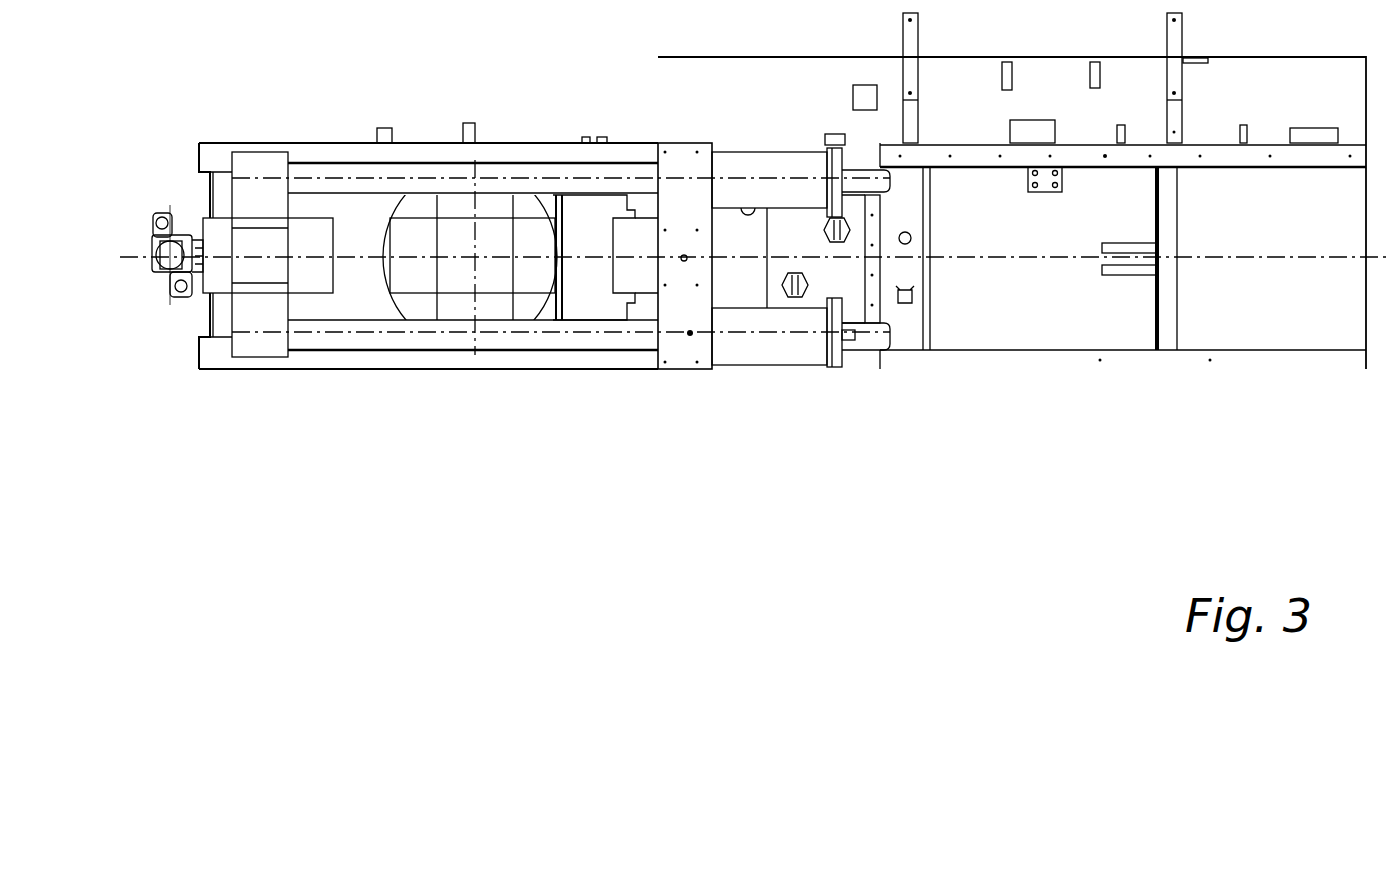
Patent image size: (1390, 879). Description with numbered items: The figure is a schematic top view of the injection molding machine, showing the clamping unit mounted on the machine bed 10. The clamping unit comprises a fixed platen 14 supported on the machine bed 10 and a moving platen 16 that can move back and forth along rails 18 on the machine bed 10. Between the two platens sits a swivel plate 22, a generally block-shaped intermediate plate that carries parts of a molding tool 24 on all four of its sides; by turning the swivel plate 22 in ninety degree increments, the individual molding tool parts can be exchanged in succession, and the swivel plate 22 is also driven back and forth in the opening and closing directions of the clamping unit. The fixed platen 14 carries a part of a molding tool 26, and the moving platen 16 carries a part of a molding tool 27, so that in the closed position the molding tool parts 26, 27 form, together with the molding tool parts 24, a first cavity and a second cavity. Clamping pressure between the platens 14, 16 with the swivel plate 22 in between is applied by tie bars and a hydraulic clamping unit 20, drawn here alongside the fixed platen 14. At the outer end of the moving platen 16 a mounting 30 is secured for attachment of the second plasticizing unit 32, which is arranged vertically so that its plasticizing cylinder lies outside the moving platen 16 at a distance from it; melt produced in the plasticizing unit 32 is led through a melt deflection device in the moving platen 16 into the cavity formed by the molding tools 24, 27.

The machine bed 10 is at (1052, 362).
The fixed platen 14 is at (677, 355).
The moving platen 16 is at (253, 348).
The guide rails 18 is at (330, 170).
The hydraulic cylinders 20 is at (775, 162).
The swivel plate 22 is at (460, 280).
The molding tool 24 is at (497, 308).
The molding tool 26 is at (628, 275).
The molding tool 27 is at (305, 282).
The mounting 30 is at (213, 282).
The second plasticizing unit 32 is at (150, 290).